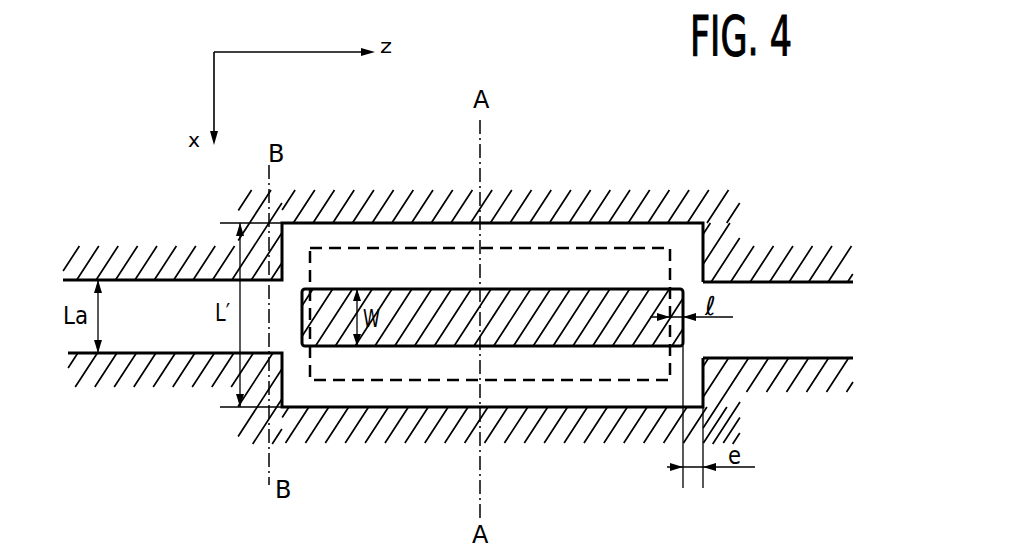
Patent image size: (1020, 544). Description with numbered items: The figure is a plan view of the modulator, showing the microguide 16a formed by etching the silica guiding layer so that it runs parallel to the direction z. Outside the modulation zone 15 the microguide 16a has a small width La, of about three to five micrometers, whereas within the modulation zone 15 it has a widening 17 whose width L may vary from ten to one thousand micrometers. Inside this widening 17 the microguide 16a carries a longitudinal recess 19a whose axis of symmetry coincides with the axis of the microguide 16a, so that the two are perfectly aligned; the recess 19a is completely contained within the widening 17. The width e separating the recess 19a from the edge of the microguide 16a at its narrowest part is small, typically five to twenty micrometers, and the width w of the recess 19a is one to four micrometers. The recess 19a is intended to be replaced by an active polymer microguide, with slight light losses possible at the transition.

The modulation zone 15 is at (617, 192).
The microguide 16a is at (763, 278).
The widening 17 is at (352, 223).
The longitudinal recess 19a is at (533, 318).